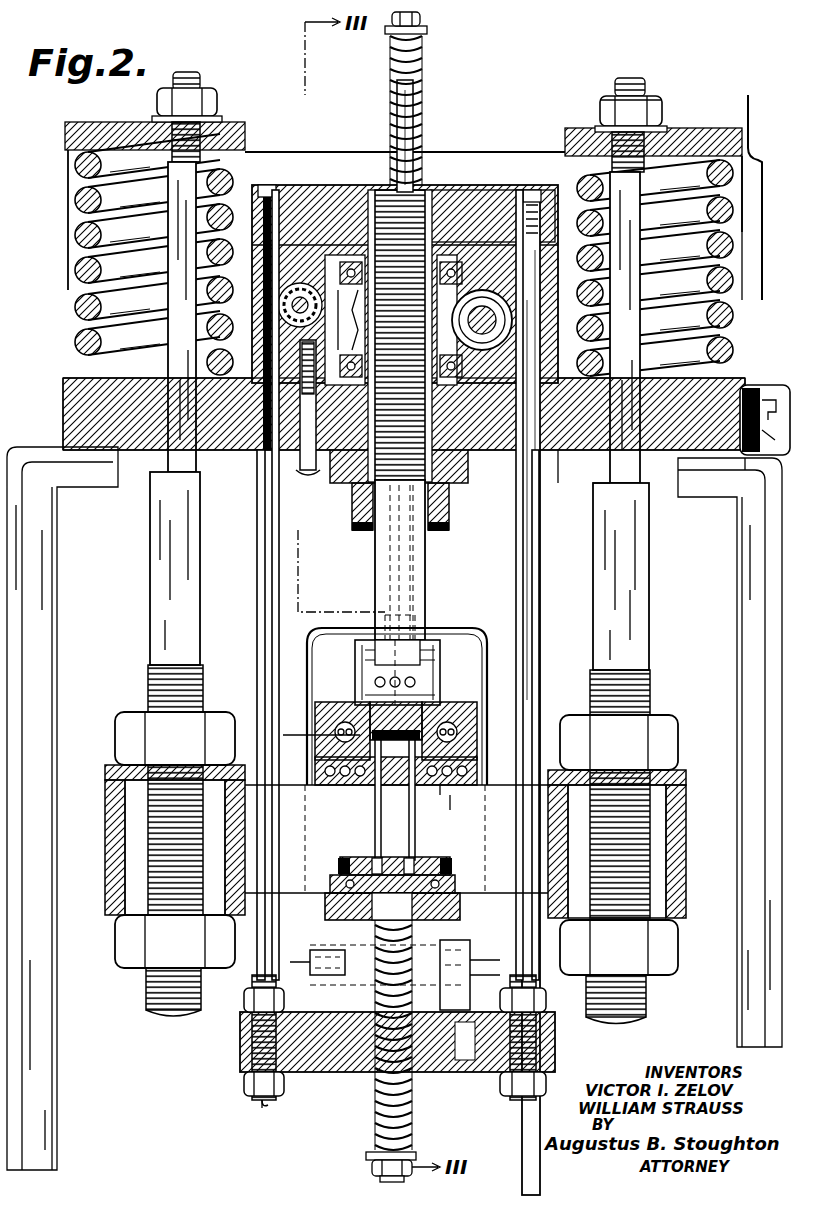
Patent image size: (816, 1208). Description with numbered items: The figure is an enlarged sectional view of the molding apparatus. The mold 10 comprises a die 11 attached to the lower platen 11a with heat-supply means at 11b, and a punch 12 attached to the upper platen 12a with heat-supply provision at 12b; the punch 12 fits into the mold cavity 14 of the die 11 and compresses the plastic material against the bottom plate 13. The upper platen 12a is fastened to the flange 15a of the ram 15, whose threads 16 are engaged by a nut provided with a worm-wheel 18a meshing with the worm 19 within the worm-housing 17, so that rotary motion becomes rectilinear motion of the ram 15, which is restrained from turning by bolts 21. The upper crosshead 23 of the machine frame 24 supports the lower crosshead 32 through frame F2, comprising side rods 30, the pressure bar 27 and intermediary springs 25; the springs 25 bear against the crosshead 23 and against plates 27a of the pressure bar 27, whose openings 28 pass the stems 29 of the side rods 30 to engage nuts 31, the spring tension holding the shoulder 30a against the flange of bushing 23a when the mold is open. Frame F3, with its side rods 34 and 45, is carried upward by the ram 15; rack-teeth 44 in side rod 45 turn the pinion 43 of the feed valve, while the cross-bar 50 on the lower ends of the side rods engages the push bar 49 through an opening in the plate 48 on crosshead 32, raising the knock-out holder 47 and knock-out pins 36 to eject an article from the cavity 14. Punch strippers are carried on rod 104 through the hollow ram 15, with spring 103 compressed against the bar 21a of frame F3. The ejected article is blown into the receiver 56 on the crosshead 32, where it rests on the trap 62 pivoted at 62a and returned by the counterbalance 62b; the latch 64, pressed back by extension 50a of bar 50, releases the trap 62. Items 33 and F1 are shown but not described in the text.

The mold 10 is at (505, 728).
The die 11 is at (462, 712).
The lower platen 11a is at (480, 810).
The heat-supply means for the die 11b is at (460, 785).
The punch 12 is at (445, 690).
The upper platen 12a is at (450, 660).
The heat-supply means for the punch 12b is at (375, 682).
The bottom plate 13 is at (345, 785).
The mold cavity 14 is at (305, 740).
The ram 15 is at (427, 560).
The flange of the ram 15a is at (420, 640).
The threads 16 is at (360, 490).
The worm-housing 17 is at (290, 240).
The worm-wheel 18a is at (330, 245).
The worm 19 is at (485, 340).
The bolts 21 is at (440, 185).
The bar of frame F3 21a is at (480, 195).
The upper crosshead 23 is at (63, 412).
The bushing 23a is at (590, 470).
The machine frame 24 is at (47, 602).
The springs 25 is at (75, 300).
The pressure bar 27 is at (520, 160).
The plates 27a is at (700, 128).
The openings 28 is at (640, 125).
The stems 29 is at (678, 133).
The side rods 30 is at (650, 632).
The shoulder 30a is at (600, 495).
The nuts 31 is at (630, 103).
The lower crosshead 32 is at (686, 812).
The latch box 33 is at (735, 468).
The side rod of frame F3 34 is at (528, 635).
The knock-out pins 36 is at (378, 818).
The pinion 43 is at (290, 300).
The rack-teeth 44 is at (255, 420).
The side rod of frame F3 45 is at (270, 590).
The knock-out holder 47 is at (460, 870).
The plate 48 is at (460, 900).
The push bar 49 is at (360, 970).
The cross-bar 50 is at (335, 1075).
The extension 50a is at (420, 1072).
The receiver 56 is at (305, 655).
The trap 62 is at (248, 992).
The pivot of the trap 62a is at (255, 1000).
The counterbalance 62b is at (285, 1040).
The latch 64 is at (555, 985).
The spring 103 is at (425, 78).
The rod 104 is at (420, 115).
The force F1 is at (730, 492).
The frame F2 is at (650, 580).
The frame F3 is at (262, 518).